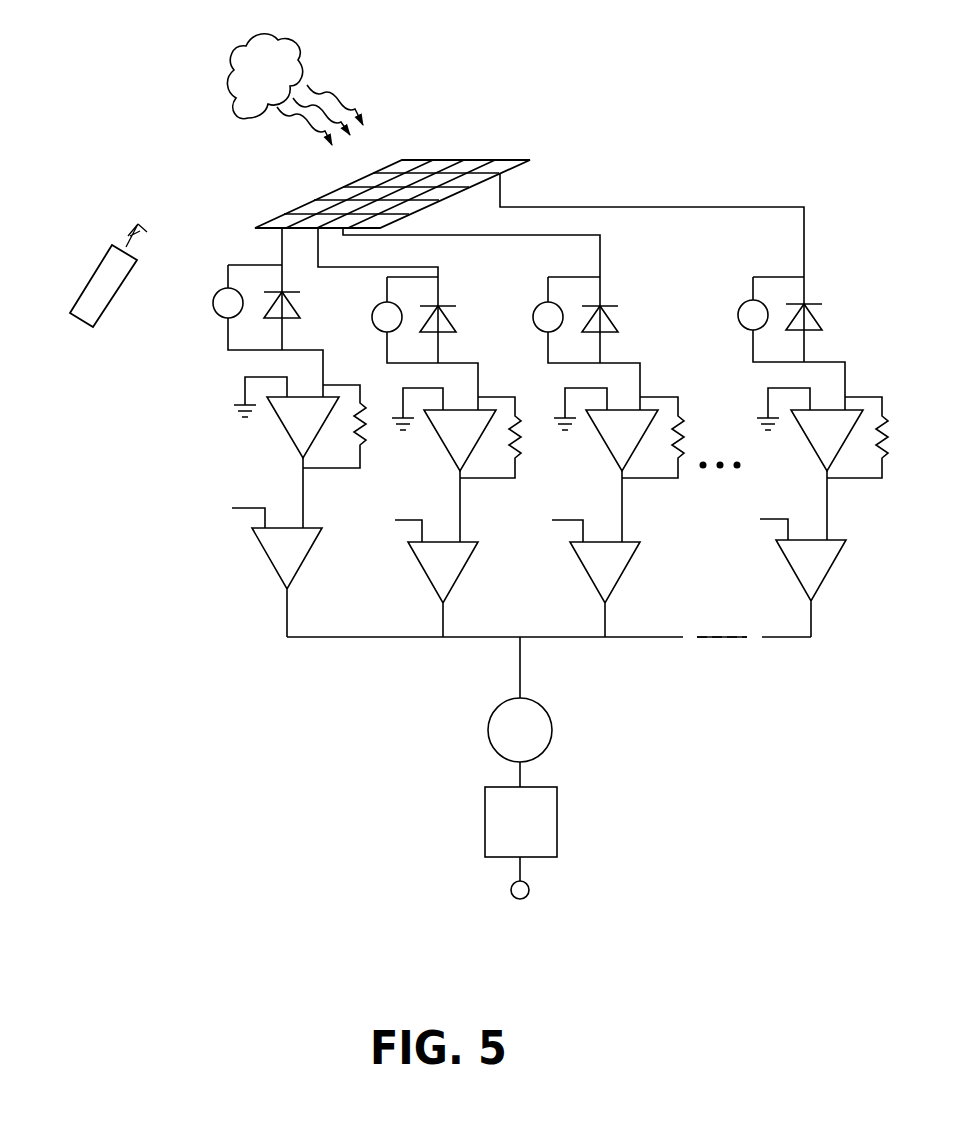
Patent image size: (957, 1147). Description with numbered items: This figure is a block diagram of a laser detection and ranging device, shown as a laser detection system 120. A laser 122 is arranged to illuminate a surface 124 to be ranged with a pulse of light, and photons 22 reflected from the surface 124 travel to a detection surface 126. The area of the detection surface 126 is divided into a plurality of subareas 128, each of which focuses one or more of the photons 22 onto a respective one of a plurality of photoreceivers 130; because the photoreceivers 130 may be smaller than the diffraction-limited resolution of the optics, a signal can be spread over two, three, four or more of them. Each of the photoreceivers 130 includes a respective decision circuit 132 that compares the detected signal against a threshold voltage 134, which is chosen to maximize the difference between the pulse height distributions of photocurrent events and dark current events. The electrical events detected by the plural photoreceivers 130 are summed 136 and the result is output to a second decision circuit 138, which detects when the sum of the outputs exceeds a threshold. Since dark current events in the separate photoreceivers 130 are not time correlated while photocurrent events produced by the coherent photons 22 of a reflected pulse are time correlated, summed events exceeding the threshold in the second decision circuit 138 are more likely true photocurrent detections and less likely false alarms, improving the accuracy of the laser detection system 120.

The photons 22 is at (345, 100).
The laser detection system 120 is at (257, 700).
The laser 122 is at (93, 270).
The surface 124 is at (283, 46).
The detection surface 126 is at (434, 126).
The subareas 128 is at (510, 160).
The photoreceivers 130 is at (204, 345).
The decision circuits 132 is at (236, 448).
The threshold voltage 134 is at (217, 528).
The summer 136 is at (550, 713).
The second decision circuit 138 is at (557, 807).